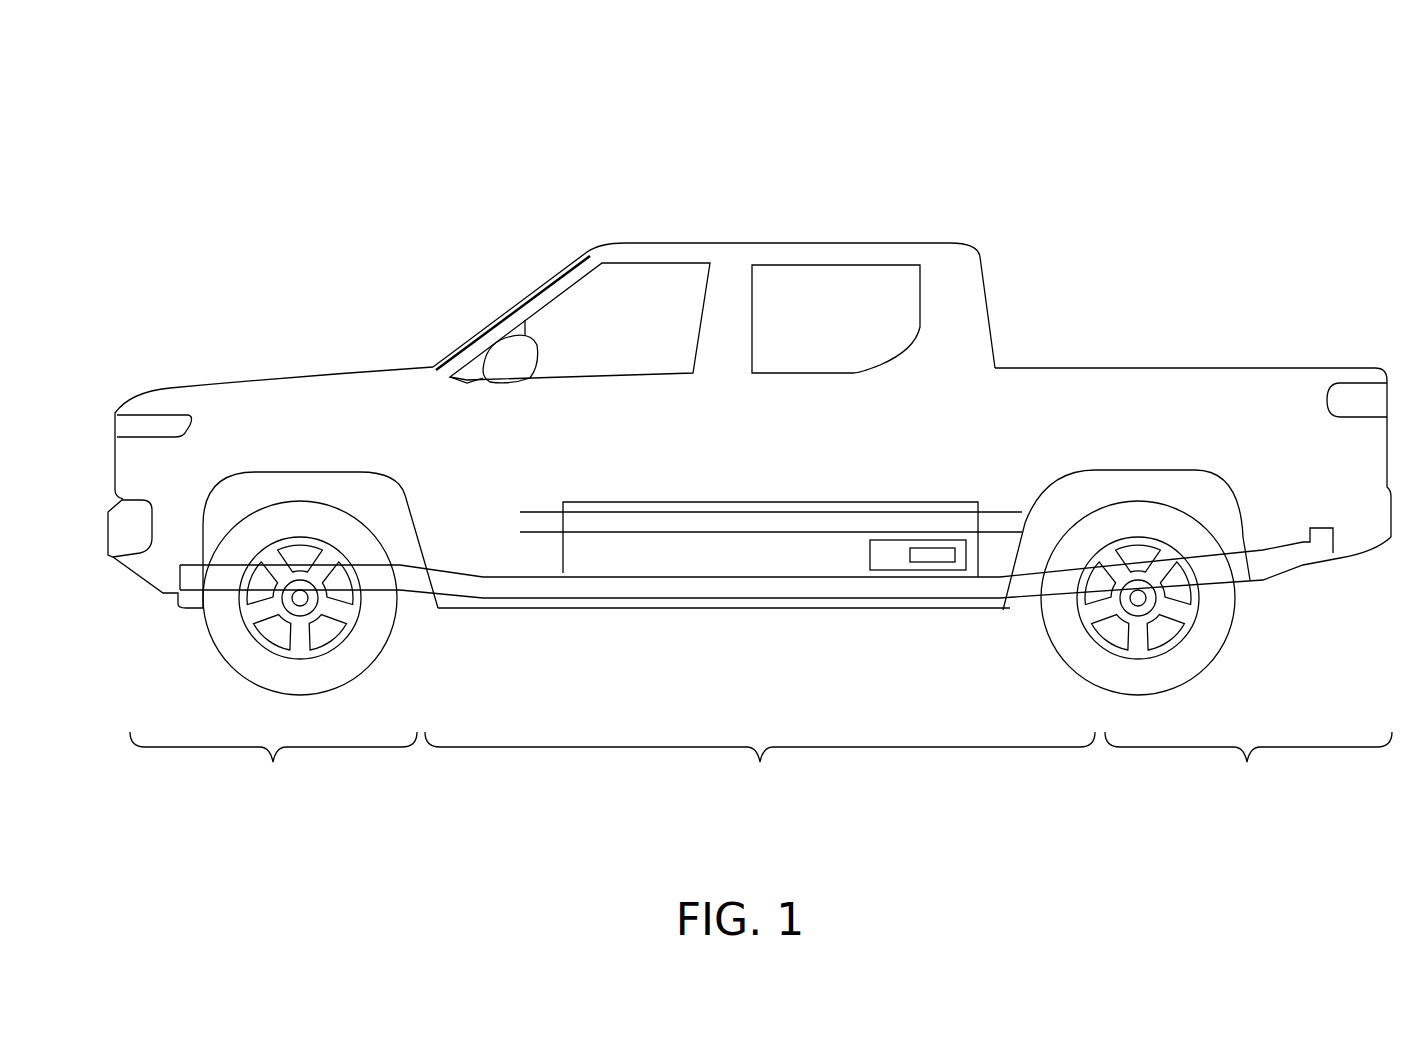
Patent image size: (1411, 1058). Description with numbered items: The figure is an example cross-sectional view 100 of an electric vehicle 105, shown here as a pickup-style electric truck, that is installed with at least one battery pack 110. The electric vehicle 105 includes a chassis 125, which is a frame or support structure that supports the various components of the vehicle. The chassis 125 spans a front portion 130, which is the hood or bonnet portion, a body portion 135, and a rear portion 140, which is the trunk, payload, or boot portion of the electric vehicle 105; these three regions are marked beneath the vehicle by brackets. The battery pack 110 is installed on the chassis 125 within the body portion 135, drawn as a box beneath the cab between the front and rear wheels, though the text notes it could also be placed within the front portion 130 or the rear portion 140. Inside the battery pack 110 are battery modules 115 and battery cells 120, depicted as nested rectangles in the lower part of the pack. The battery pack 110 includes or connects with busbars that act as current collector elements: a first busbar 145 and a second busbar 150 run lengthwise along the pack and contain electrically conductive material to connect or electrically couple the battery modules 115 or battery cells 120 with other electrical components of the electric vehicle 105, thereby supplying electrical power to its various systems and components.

The cross-sectional view 100 is at (352, 158).
The electric vehicle 105 is at (685, 232).
The battery pack 110 is at (785, 500).
The battery module 115 is at (957, 570).
The battery cell 120 is at (933, 562).
The chassis 125 is at (197, 560).
The front portion 130 is at (273, 773).
The body portion 135 is at (760, 773).
The rear portion 140 is at (1248, 773).
The first busbar 145 is at (665, 510).
The second busbar 150 is at (618, 530).